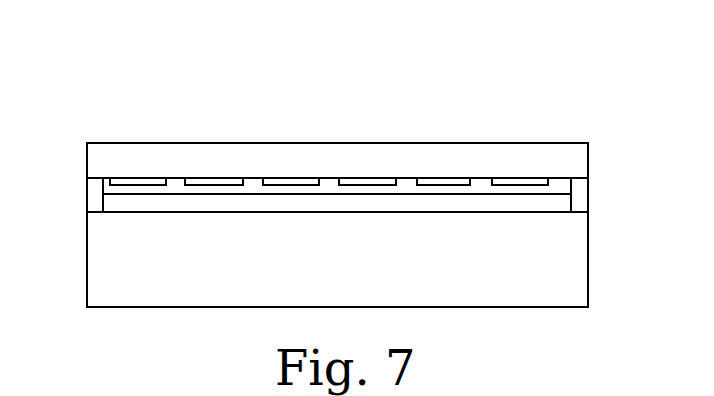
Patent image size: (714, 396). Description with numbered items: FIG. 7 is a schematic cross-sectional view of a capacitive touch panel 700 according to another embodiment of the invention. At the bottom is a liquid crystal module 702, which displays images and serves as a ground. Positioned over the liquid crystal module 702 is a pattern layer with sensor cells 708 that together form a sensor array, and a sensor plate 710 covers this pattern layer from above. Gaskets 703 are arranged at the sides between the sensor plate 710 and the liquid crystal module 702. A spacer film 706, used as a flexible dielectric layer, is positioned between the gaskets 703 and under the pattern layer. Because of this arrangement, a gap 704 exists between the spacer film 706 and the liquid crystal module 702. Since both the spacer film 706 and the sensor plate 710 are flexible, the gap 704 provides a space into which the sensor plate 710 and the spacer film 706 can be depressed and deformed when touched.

The image sensor device 700 is at (157, 43).
The liquid crystal module 702 is at (337, 247).
The gaskets 703 is at (92, 195).
The gap 704 is at (188, 204).
The spacer film 706 is at (298, 193).
The sensor cells 708 is at (355, 181).
The sensor plate 710 is at (458, 154).